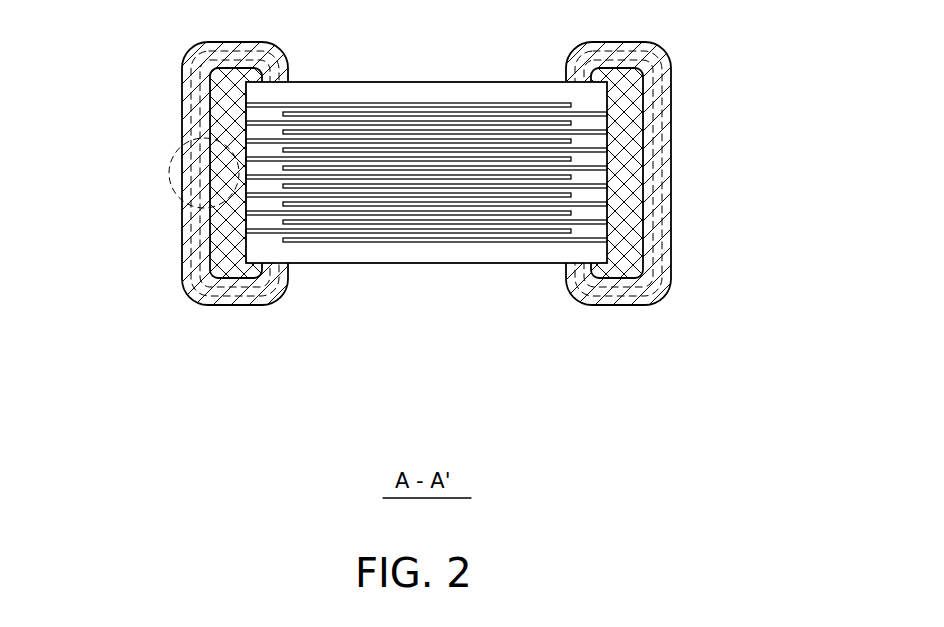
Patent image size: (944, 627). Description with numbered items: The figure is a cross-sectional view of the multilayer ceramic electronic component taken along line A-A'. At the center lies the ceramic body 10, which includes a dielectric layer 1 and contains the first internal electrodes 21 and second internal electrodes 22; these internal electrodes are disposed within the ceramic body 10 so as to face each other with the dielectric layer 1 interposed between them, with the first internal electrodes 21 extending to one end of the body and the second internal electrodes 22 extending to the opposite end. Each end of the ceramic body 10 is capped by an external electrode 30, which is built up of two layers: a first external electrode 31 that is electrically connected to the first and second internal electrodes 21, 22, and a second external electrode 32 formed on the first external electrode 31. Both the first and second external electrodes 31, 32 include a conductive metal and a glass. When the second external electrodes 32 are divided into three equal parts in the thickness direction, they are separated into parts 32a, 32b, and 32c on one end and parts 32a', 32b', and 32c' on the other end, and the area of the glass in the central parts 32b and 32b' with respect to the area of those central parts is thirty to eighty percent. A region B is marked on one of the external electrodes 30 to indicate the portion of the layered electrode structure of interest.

The dielectric layer 1 is at (489, 224).
The ceramic body 10 is at (425, 263).
The first internal electrode 21 is at (597, 168).
The second internal electrode 22 is at (570, 193).
The external electrode 30 is at (465, 253).
The first external electrode 31 is at (197, 298).
The second external electrode 32 is at (425, 232).
The first part of second external electrode 32a is at (425, 217).
The central part of second external electrode 32b is at (426, 213).
The third part of second external electrode 32c is at (426, 209).
The first part of second external electrode 32a' is at (664, 335).
The central part of second external electrode 32b' is at (612, 330).
The third part of second external electrode 32c' is at (567, 336).
The region B is at (180, 152).